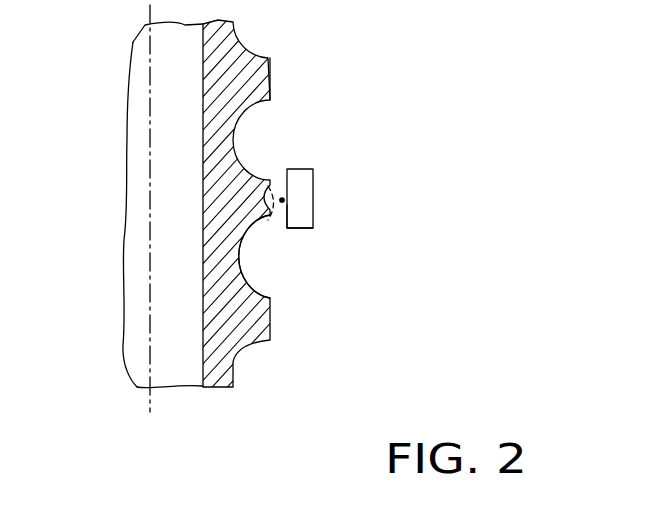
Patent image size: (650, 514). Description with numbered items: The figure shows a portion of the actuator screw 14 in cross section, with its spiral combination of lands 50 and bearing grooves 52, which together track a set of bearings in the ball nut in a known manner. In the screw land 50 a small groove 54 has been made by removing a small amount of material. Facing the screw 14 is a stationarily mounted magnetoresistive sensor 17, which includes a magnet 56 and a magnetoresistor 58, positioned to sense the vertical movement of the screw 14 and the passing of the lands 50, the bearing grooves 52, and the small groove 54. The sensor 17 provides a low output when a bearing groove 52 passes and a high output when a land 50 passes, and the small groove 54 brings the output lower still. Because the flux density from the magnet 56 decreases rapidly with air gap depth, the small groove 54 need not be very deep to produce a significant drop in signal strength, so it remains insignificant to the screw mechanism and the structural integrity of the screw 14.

The screw 14 is at (130, 125).
The land 50 is at (273, 77).
The bearing groove 52 is at (234, 138).
The small groove 54 is at (280, 226).
The magnet 56 is at (305, 185).
The magnetoresistor 58 is at (282, 198).
The magnetoresistive sensor 17 is at (308, 210).